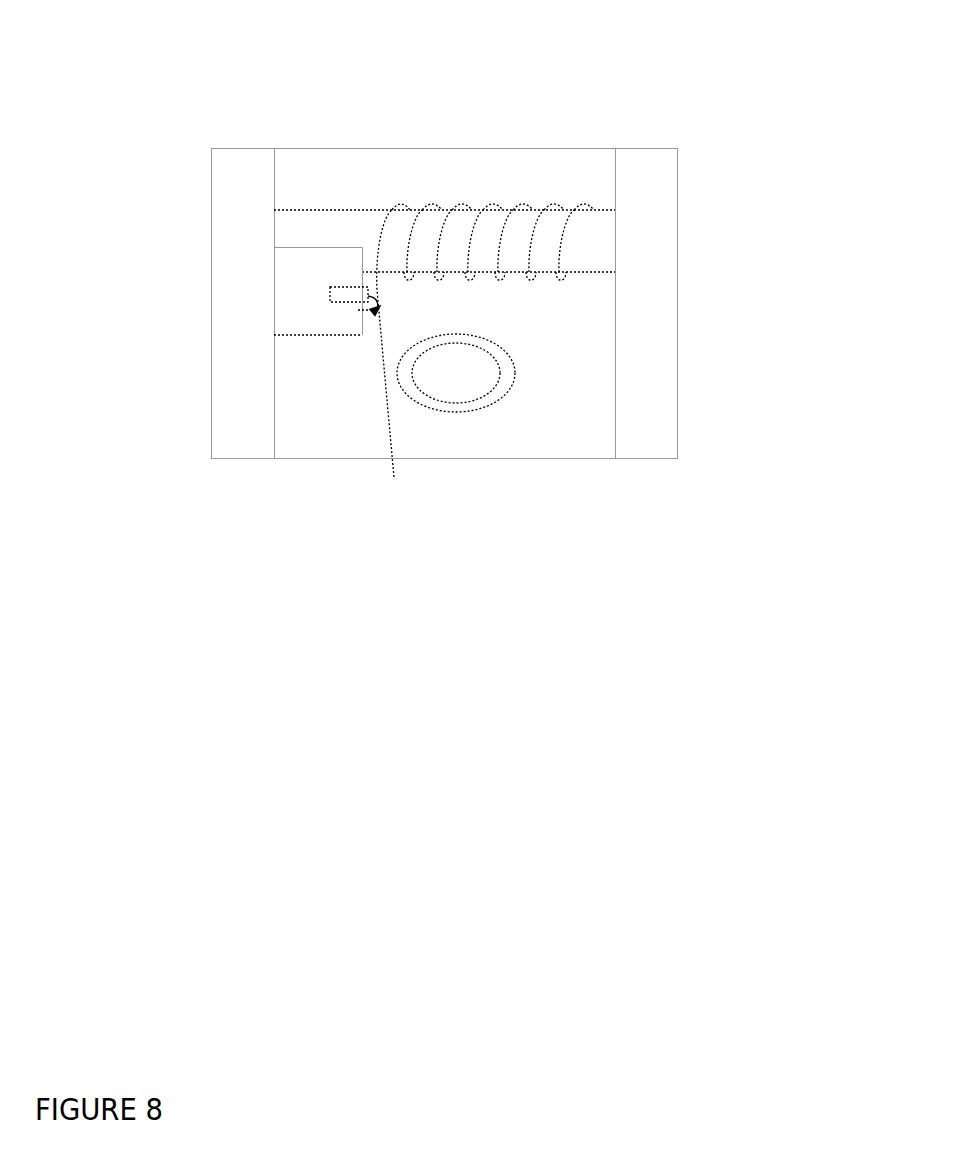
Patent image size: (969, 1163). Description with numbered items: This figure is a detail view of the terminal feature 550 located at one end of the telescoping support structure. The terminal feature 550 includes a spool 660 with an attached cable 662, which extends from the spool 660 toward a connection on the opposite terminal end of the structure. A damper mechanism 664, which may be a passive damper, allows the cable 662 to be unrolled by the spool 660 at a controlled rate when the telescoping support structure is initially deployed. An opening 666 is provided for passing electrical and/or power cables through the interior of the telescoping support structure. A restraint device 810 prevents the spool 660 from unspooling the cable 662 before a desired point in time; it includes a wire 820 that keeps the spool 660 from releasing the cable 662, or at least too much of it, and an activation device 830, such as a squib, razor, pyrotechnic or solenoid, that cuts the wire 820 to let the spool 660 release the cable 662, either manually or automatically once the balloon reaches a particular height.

The terminal feature 550 is at (222, 45).
The spool 660 is at (615, 251).
The cable 662 is at (551, 202).
The damper mechanism 664 is at (273, 260).
The opening 666 is at (491, 392).
The restraint device 810 is at (332, 303).
The wire 820 is at (378, 307).
The activation device 830 is at (356, 303).